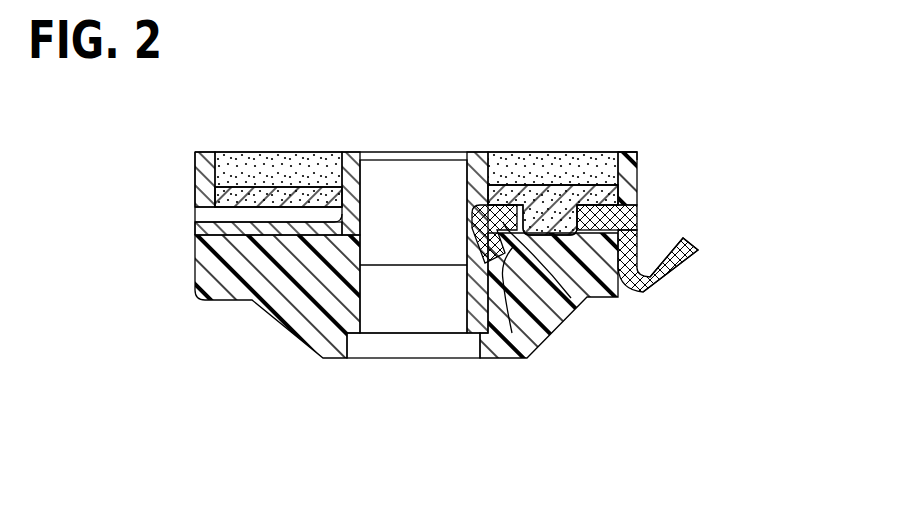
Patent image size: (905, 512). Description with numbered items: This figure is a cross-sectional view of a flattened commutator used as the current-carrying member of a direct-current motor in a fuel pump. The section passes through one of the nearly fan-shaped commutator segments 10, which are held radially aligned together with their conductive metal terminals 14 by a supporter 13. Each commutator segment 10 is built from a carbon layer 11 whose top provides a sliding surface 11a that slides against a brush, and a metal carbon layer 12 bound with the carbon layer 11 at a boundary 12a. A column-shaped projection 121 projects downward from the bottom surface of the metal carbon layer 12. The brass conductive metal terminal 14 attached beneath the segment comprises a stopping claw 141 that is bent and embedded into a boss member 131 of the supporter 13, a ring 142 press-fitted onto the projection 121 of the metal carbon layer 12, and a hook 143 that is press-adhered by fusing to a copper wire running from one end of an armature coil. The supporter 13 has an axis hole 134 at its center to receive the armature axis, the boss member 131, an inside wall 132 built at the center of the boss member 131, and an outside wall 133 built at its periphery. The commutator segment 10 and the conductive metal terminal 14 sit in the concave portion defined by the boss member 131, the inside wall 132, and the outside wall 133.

The commutator segment 10 is at (471, 150).
The carbon layer 11 is at (593, 152).
The sliding surface 11a is at (523, 152).
The metal carbon layer 12 is at (591, 151).
The boundary 12a is at (630, 180).
The column-shaped projection 121 is at (630, 235).
The supporter 13 is at (476, 272).
The boss member 131 is at (498, 343).
The inside wall 132 is at (467, 160).
The outside wall 133 is at (637, 152).
The axis hole 134 is at (364, 188).
The conductive metal terminal 14 is at (664, 327).
The stopping claw 141 is at (512, 333).
The ring 142 is at (571, 298).
The hook 143 is at (677, 277).